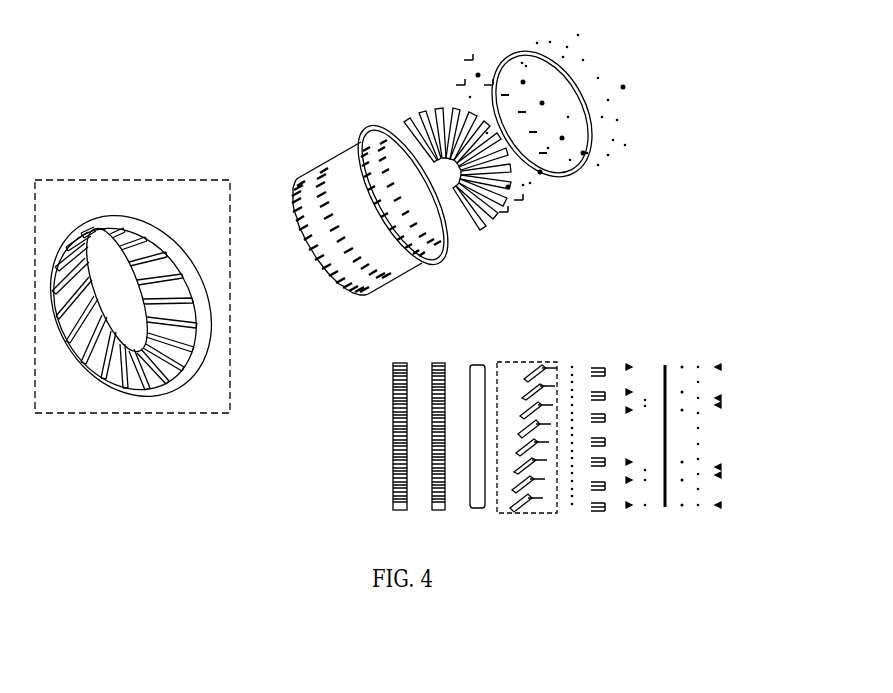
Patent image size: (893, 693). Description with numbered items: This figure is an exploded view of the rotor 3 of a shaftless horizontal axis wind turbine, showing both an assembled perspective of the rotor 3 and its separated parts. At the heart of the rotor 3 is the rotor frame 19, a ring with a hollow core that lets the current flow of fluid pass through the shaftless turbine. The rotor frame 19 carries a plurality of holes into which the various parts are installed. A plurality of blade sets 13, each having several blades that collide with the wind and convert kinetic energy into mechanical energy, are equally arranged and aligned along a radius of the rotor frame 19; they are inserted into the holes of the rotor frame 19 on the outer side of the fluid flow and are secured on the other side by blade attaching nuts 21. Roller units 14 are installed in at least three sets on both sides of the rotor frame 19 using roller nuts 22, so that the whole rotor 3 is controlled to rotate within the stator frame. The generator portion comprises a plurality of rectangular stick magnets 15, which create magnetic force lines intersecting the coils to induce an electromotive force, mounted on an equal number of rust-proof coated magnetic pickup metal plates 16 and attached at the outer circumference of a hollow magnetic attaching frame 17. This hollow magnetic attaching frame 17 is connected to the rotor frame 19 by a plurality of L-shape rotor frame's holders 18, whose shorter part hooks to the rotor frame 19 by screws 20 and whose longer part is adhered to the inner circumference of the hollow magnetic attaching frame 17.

The rotor 3 is at (80, 178).
The blade set 13 is at (523, 360).
The roller unit 14 is at (630, 367).
The magnets 15 is at (395, 362).
The magnetic pickup metal plates 16 is at (435, 363).
The hollow magnetic attaching frame 17 is at (478, 365).
The L-shape rotor frame's holders 18 is at (593, 367).
The rotor frame 19 is at (665, 367).
The screws 20 is at (572, 365).
The blade attaching nuts 21 is at (700, 367).
The roller nuts 22 is at (645, 367).